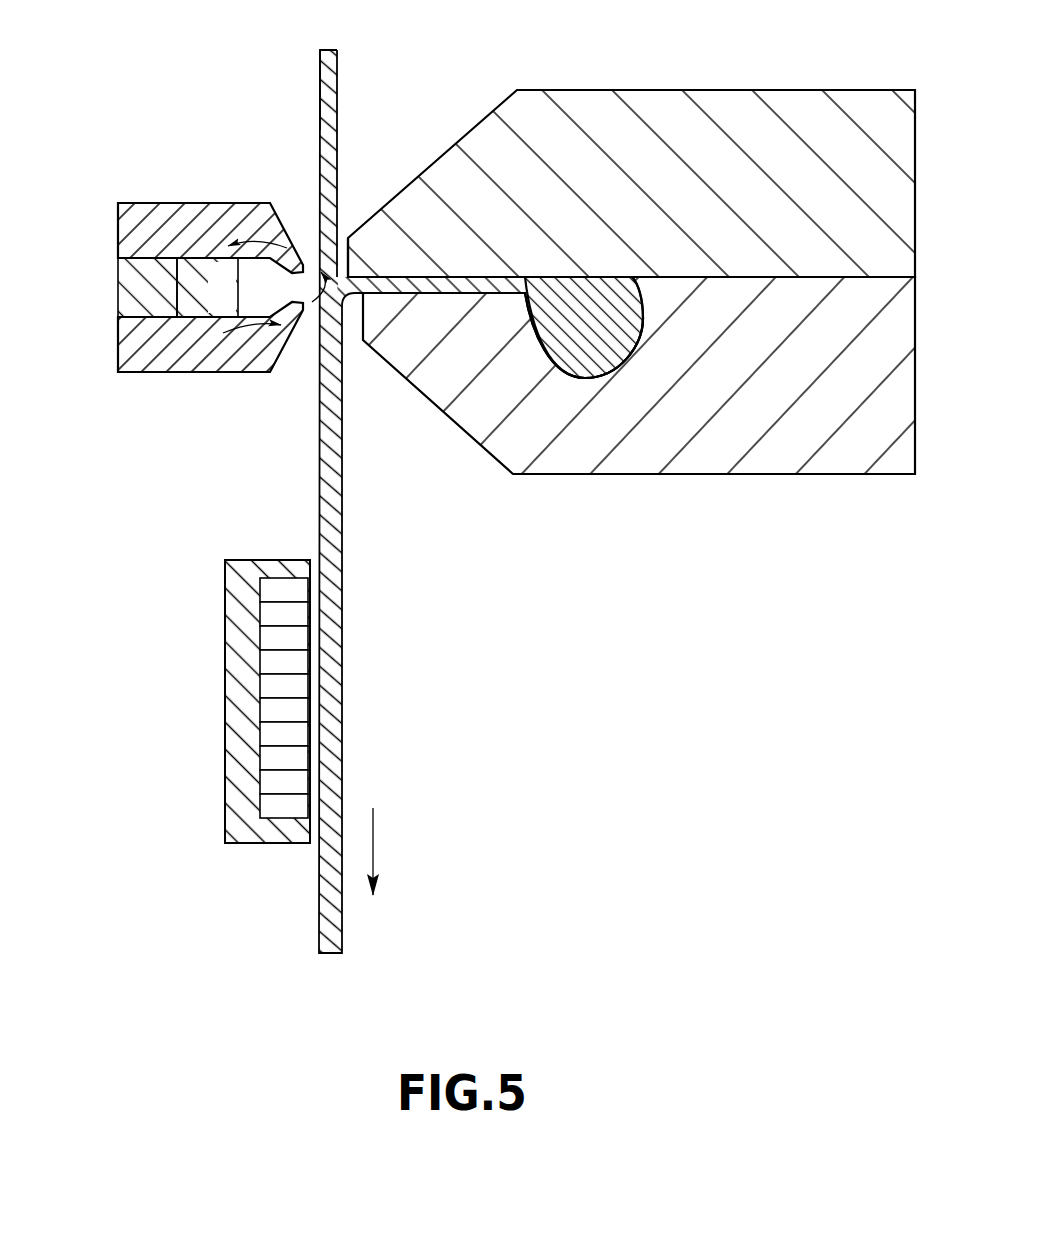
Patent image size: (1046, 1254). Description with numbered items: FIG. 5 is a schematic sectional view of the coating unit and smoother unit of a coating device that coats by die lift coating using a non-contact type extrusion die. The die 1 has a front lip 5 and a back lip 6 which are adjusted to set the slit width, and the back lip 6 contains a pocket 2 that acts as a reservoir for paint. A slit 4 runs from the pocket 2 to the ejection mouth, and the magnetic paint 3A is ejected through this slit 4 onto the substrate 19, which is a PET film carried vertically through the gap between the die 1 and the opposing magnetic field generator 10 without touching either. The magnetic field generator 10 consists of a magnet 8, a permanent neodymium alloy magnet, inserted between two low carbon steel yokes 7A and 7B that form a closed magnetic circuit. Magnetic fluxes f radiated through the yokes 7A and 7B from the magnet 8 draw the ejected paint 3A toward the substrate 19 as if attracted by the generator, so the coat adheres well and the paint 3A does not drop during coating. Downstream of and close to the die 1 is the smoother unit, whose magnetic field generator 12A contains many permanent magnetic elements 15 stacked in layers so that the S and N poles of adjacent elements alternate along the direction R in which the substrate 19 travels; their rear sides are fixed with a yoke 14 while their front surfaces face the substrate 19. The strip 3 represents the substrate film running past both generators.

The die 1 is at (798, 84).
The pocket 2 is at (580, 380).
The magnetic strip 3 is at (341, 548).
The magnetic paint 3A is at (615, 345).
The slit 4 is at (352, 302).
The front lip 5 is at (365, 262).
The back lip 6 is at (380, 327).
The yoke 7A is at (262, 203).
The yoke 7B is at (265, 340).
The magnet 8 is at (190, 278).
The magnetic field generator 10 is at (175, 287).
The magnetic field generator 12A is at (203, 701).
The yoke 14 is at (232, 742).
The permanent magnetic elements 15 is at (268, 688).
The substrate 19 is at (322, 75).
The magnetic fluxes f is at (223, 333).
The direction R is at (373, 842).